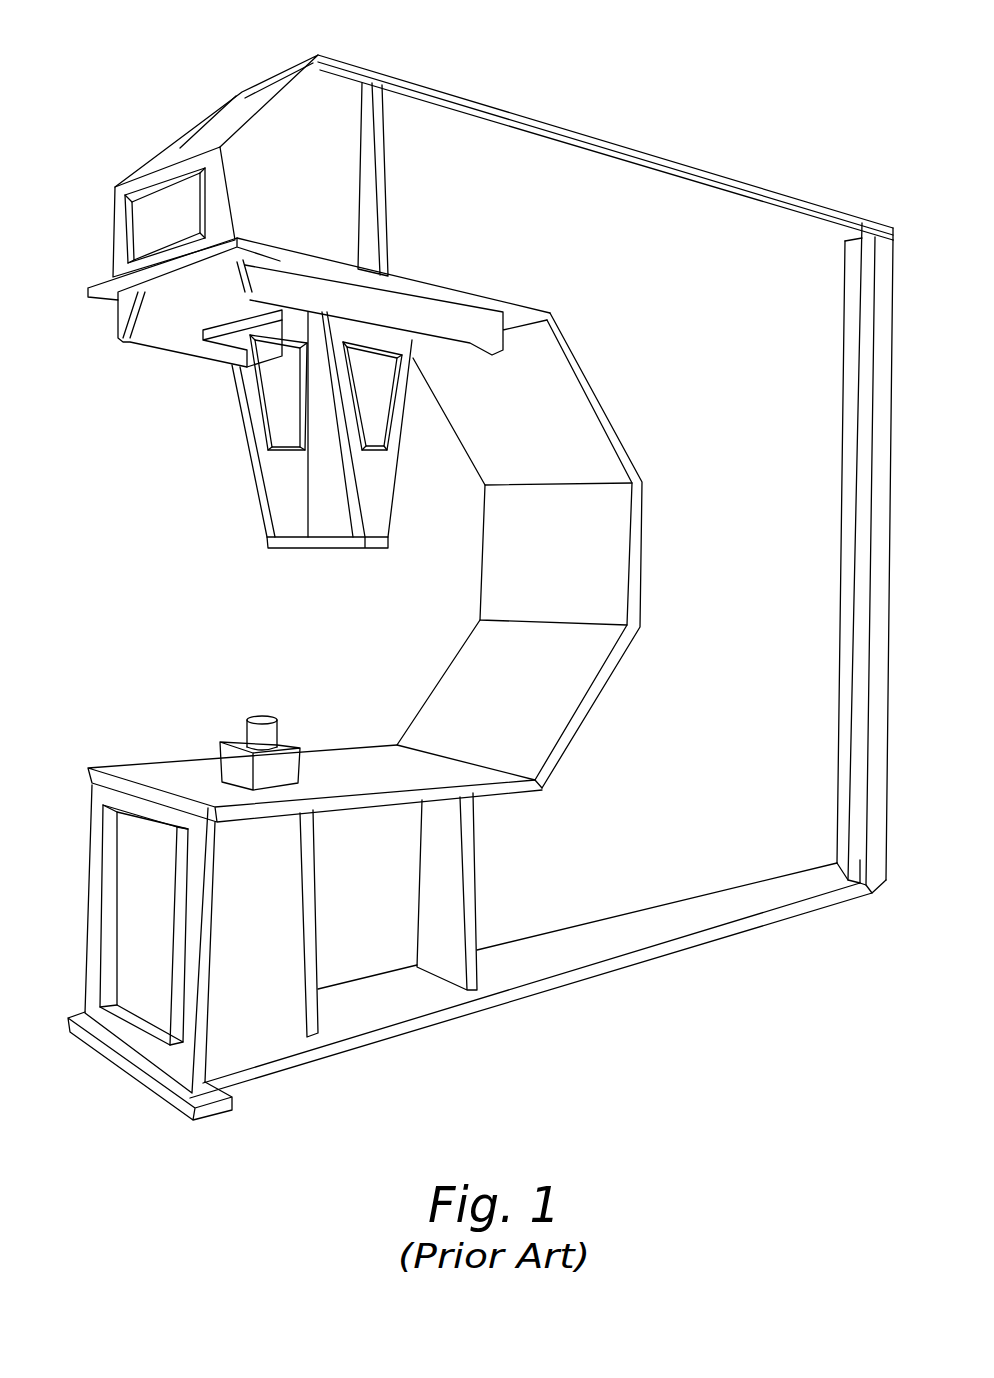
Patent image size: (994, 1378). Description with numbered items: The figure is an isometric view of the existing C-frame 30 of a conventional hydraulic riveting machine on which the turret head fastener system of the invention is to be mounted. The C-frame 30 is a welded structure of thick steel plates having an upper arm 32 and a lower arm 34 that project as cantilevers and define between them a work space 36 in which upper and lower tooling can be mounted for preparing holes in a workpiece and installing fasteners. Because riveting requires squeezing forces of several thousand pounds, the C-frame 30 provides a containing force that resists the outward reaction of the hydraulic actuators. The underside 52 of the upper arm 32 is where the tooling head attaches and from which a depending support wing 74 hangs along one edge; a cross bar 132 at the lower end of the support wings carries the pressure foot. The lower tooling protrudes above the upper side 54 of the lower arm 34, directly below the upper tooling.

The C-frame 30 is at (702, 82).
The upper arm 32 is at (148, 162).
The depending support wing 74 is at (440, 311).
The underside 52 is at (180, 288).
The work space 36 is at (238, 591).
The cross bar 132 is at (335, 545).
The upper side 54 is at (153, 772).
The lower arm 34 is at (88, 865).